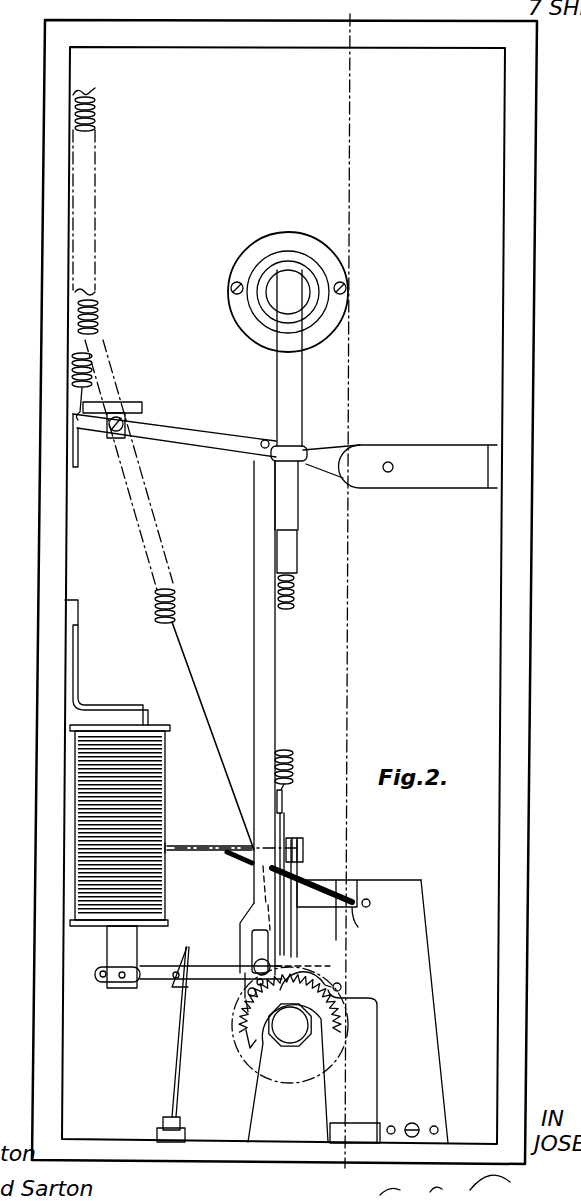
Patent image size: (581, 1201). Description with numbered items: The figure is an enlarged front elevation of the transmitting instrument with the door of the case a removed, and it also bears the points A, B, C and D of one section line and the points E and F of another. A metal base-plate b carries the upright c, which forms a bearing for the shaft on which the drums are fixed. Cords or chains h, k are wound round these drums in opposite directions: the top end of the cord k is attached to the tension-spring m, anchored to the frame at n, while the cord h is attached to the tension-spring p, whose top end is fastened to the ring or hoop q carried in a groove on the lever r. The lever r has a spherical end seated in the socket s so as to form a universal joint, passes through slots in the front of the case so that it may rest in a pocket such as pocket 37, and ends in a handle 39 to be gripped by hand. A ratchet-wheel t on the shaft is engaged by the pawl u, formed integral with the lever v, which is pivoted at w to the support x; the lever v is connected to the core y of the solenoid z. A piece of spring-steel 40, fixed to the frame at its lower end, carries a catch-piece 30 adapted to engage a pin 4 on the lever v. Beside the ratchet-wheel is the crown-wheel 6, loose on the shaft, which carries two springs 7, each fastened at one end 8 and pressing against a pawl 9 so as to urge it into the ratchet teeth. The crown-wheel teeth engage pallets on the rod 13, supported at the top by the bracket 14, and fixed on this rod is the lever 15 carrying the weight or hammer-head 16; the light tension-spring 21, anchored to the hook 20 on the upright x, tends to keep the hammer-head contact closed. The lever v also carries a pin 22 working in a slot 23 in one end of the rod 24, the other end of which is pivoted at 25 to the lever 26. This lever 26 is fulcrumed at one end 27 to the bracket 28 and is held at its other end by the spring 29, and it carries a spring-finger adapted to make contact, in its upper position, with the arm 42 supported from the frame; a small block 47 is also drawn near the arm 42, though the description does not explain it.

The case a is at (45, 830).
The section line point A is at (338, 591).
The pocket 37 is at (92, 90).
The anchor point n is at (96, 296).
The tension-spring m is at (100, 320).
The spring 29 is at (92, 370).
The arm 42 is at (122, 406).
The block 47 is at (111, 440).
The socket s is at (323, 268).
The ring or hoop q is at (272, 440).
The pivot 25 is at (262, 448).
The lever r is at (290, 508).
The handle 39 is at (298, 556).
The tension-spring p is at (296, 603).
The lever 26 is at (325, 454).
The fulcrum 27 is at (392, 463).
The bracket 28 is at (418, 488).
The rod 24 is at (255, 708).
The cord k is at (190, 662).
The solenoid z is at (166, 800).
The core y is at (107, 952).
The lever v is at (214, 975).
The piece of spring-steel 40 is at (177, 1046).
The catch-piece 30 is at (183, 951).
The pin 4 is at (172, 985).
The lever 15 is at (218, 840).
The weight or hammer-head 16 is at (172, 846).
The section line point E is at (174, 845).
The section line point F is at (318, 846).
The light tension-spring 21 is at (243, 868).
The cord h is at (285, 826).
The rod 13 is at (296, 910).
The bracket 14 is at (356, 878).
The hook 20 is at (370, 905).
The support x is at (388, 1011).
The springs 7 is at (245, 1033).
The crown-wheel 6 is at (248, 1064).
The upright c is at (288, 1073).
The ratchet-wheel t is at (250, 1050).
The pawl 9 is at (246, 1008).
The spring fastening end 8 is at (248, 992).
The pin 22 is at (256, 952).
The slot 23 is at (260, 960).
The pawl u is at (307, 964).
The pivot w is at (345, 984).
The section line point B is at (326, 934).
The section line point C is at (358, 934).
The section line point D is at (355, 1117).
The base-plate b is at (372, 1124).